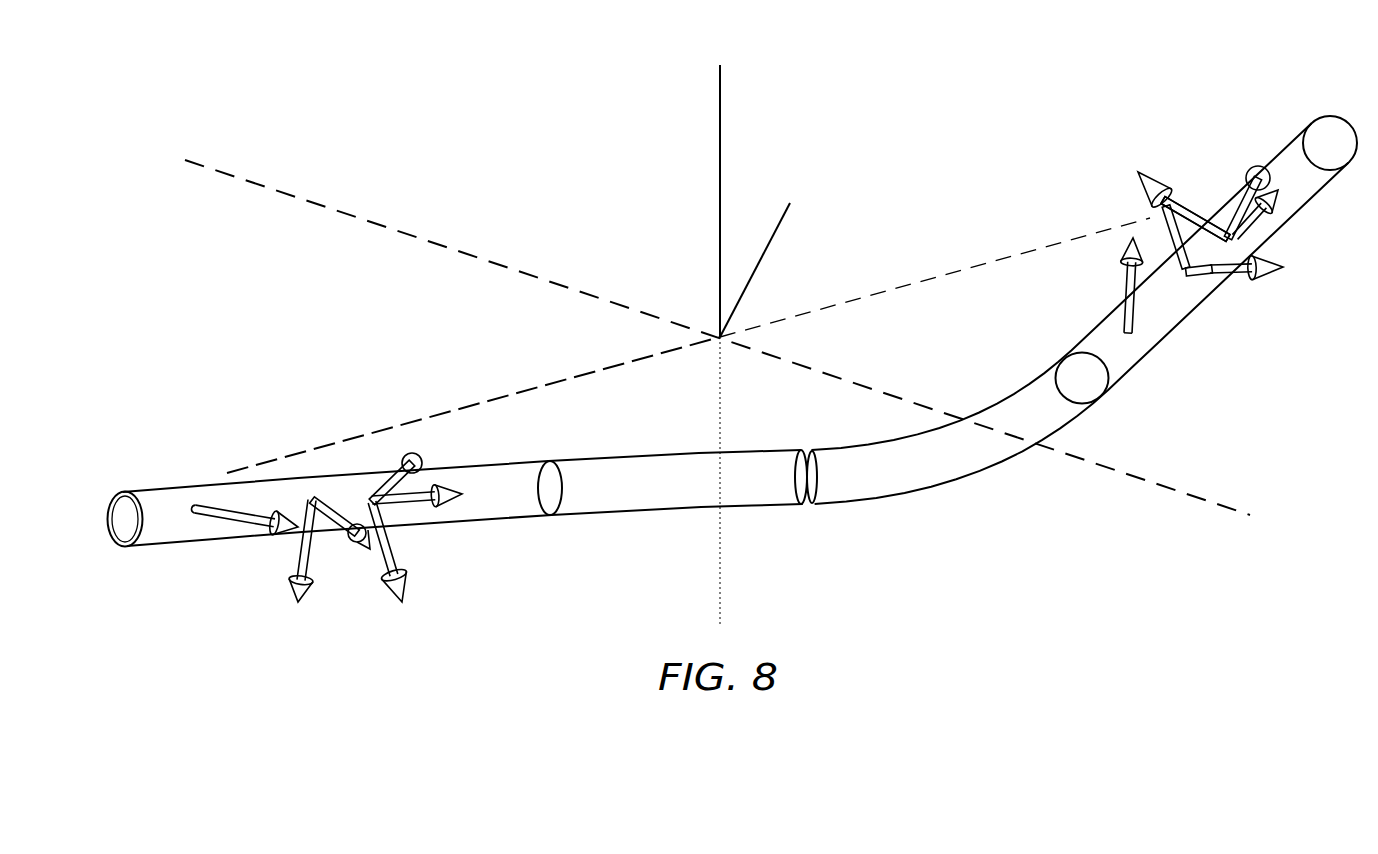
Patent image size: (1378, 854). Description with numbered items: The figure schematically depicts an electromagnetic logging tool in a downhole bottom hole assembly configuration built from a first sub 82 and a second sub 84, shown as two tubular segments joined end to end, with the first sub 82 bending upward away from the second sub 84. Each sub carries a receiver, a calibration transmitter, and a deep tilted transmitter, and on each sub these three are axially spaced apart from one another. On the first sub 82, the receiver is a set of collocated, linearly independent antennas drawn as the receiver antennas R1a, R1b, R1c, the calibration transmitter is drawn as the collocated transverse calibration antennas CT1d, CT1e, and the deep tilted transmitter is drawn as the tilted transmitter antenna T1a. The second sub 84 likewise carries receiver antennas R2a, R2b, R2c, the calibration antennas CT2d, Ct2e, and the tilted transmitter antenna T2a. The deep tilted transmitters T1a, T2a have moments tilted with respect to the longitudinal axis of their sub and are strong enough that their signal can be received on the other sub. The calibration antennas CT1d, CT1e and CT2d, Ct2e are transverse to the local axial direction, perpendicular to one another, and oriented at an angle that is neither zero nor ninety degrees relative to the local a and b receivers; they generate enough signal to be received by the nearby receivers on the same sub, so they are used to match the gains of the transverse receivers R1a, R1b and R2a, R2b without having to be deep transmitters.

The first sub 82 is at (1137, 368).
The second sub 84 is at (158, 488).
The deep tilted transmitter antenna of the second sub T2a is at (233, 532).
The d calibration transmitter antenna of the second sub CT2d is at (293, 567).
The e calibration transmitter antenna of the second sub Ct2e is at (357, 547).
The a receiver antenna of the second sub R2a is at (427, 460).
The b receiver antenna of the second sub R2b is at (395, 567).
The c receiver antenna of the second sub R2c is at (438, 495).
The deep tilted transmitter antenna of the first sub T1a is at (1122, 275).
The e calibration transmitter antenna of the first sub CT1e is at (1158, 205).
The d calibration transmitter antenna of the first sub CT1d is at (1262, 269).
The a receiver antenna of the first sub R1a is at (1195, 198).
The b receiver antenna of the first sub R1b is at (1255, 175).
The c receiver antenna of the first sub R1c is at (1280, 200).